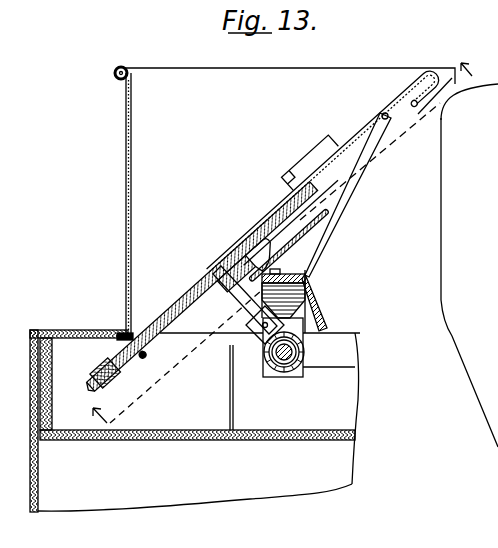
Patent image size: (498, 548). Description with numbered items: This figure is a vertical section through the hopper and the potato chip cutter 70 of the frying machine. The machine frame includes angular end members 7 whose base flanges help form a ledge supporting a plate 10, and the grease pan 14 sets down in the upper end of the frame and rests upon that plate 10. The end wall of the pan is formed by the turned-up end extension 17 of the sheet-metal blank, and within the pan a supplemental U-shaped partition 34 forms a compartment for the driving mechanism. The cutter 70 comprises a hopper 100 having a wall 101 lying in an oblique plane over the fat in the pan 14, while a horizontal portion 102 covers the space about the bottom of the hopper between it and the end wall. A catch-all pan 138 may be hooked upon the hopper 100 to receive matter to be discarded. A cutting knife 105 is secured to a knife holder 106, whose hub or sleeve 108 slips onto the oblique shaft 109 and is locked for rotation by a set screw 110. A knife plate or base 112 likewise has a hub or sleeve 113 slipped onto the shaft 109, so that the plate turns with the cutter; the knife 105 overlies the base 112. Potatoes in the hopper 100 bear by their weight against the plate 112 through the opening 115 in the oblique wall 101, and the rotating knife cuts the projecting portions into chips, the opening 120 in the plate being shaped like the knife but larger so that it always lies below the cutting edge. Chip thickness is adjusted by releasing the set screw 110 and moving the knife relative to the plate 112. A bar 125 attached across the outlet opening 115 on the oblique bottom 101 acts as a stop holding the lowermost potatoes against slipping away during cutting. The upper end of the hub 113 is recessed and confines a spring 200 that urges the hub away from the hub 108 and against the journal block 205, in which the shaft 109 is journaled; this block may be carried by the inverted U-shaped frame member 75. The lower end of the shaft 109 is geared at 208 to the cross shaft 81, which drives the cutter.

The angular end members 7 is at (32, 428).
The plate 10 is at (160, 444).
The grease pan 14 is at (280, 430).
The end extension 17 is at (50, 400).
The supplemental U-shaped partition 34 is at (230, 408).
The potato slicing device or cutter 70 is at (121, 67).
The U-shaped inverted frame member 75 is at (308, 284).
The drive shaft 81 is at (305, 352).
The hopper 100 is at (137, 100).
The oblique wall 101 is at (372, 136).
The horizontal portion 102 is at (100, 330).
The cutting knife 105 is at (115, 330).
The knife holder 106 is at (134, 367).
The hub or sleeve 108 is at (205, 280).
The shaft 109 is at (312, 301).
The set screw 110 is at (238, 258).
The knife plate or base 112 is at (170, 344).
The hub or sleeve 113 is at (224, 305).
The opening 115 is at (285, 206).
The opening 120 is at (104, 374).
The bar 125 is at (300, 164).
The catch-all pan 138 is at (432, 72).
The spring 200 is at (252, 238).
The journal block 205 is at (262, 372).
The gearing 208 is at (308, 332).